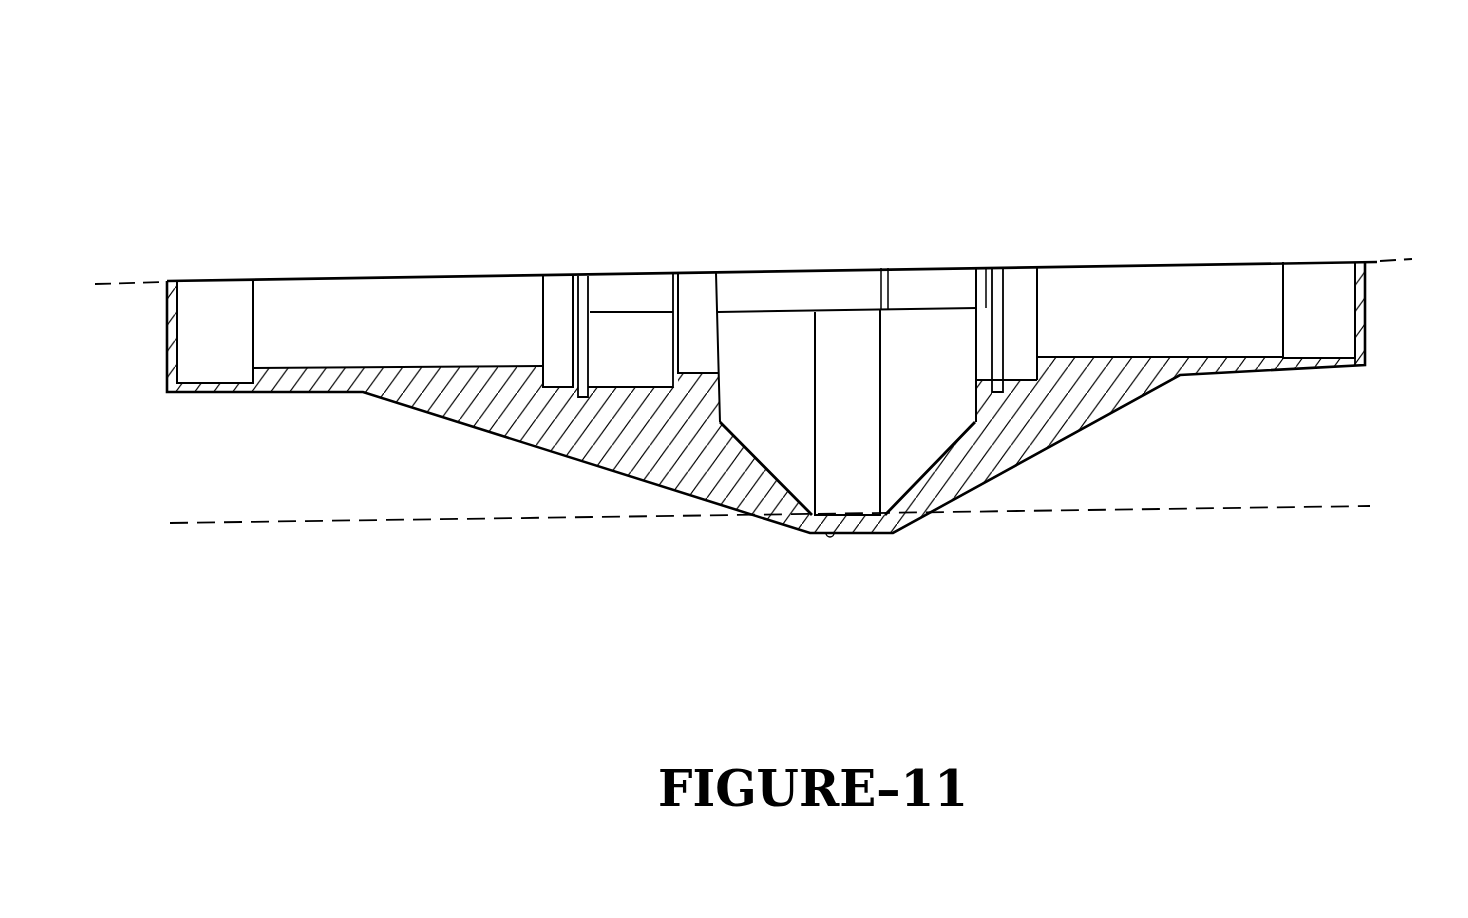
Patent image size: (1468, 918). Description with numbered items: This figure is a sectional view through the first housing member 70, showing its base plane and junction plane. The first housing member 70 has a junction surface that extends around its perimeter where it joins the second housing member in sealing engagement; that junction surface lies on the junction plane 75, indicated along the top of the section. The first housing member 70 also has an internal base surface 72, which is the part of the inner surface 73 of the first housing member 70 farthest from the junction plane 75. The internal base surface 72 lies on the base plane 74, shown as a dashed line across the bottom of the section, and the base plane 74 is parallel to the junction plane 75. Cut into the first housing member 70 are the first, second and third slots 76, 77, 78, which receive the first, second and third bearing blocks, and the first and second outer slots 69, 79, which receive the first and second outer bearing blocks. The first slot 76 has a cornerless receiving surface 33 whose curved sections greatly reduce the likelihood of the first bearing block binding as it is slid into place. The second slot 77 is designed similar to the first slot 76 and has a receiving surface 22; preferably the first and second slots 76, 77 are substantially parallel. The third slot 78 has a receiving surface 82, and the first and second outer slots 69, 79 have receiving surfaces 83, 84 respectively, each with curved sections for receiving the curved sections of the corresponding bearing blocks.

The first housing member 70 is at (428, 130).
The first outer slot 69 is at (210, 300).
The first slot 76 is at (563, 300).
The third slot 78 is at (700, 298).
The second slot 77 is at (1025, 290).
The second outer slot 79 is at (1306, 288).
The junction plane 75 is at (1382, 259).
The receiving surface 83 is at (223, 360).
The receiving surface 33 is at (555, 362).
The receiving surface 82 is at (700, 350).
The receiving surface 22 is at (1026, 350).
The receiving surface 84 is at (1328, 330).
The inner surface 73 is at (758, 457).
The internal base surface 72 is at (837, 495).
The base plane 74 is at (1232, 510).